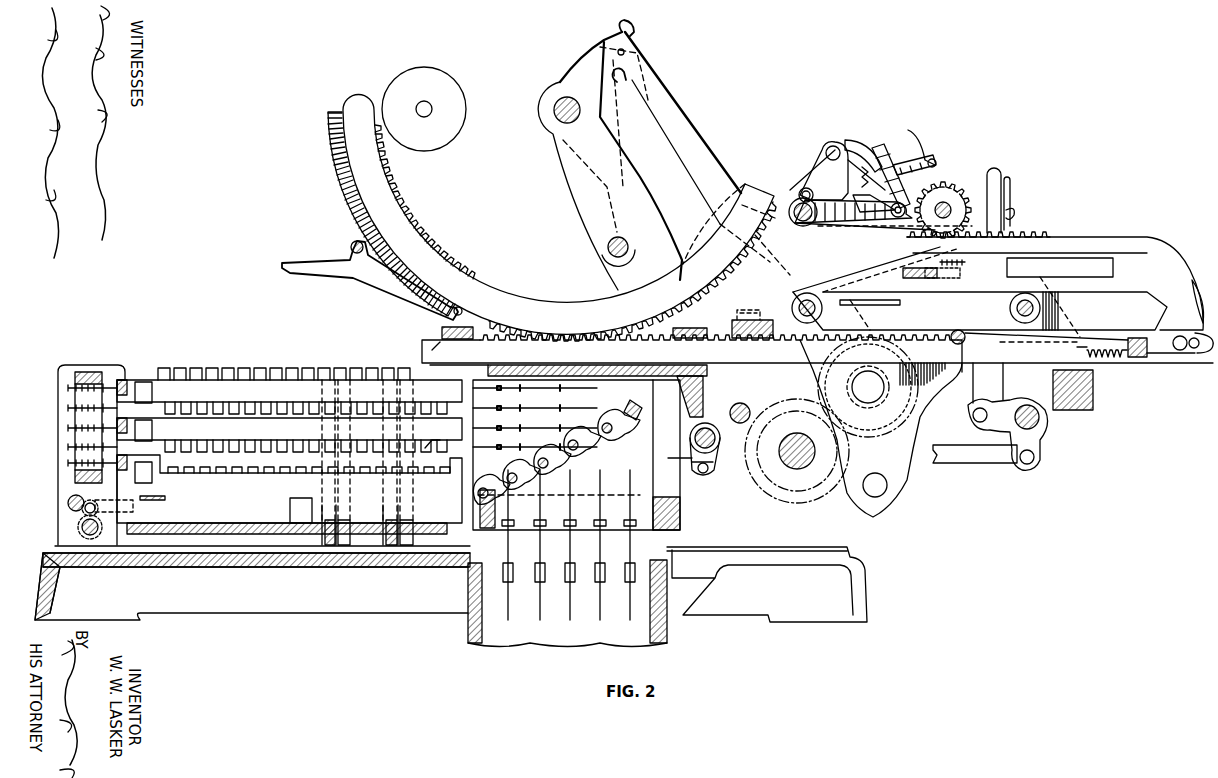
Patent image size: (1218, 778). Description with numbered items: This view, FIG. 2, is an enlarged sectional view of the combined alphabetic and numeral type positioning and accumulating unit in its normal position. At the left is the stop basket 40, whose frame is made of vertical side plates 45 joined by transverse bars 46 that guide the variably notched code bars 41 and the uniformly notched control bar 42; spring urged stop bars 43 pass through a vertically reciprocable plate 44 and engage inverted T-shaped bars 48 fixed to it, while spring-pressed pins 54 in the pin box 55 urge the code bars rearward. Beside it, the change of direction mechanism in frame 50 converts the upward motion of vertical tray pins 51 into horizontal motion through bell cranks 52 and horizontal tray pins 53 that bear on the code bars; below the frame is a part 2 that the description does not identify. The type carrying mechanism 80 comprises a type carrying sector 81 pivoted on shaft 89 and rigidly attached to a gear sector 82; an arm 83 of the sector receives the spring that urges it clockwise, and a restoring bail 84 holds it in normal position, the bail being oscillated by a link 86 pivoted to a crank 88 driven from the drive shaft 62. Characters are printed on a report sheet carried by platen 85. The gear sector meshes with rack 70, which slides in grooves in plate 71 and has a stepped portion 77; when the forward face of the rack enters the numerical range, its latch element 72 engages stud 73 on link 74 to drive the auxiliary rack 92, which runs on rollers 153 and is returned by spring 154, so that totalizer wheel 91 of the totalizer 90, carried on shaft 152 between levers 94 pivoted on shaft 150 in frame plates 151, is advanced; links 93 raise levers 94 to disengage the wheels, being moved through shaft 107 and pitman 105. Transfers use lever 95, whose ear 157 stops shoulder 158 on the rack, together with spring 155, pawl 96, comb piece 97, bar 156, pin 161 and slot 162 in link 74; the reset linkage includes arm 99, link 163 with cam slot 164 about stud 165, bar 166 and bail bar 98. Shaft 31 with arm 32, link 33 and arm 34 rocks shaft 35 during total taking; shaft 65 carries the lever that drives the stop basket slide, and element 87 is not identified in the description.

The type bars / pins 2 is at (610, 615).
The shaft 31 is at (79, 530).
The arm 32 is at (82, 510).
The link 33 is at (76, 500).
The arm 34 is at (718, 456).
The rock shaft 35 is at (712, 442).
The stop basket 40 is at (243, 336).
The variably notched code bars 41 is at (157, 380).
The control bar 42 is at (228, 480).
The stop bars 43 is at (360, 368).
The vertically reciprocable plate 44 is at (265, 523).
The side plates 45 is at (96, 365).
The transverse bars 46 is at (432, 410).
The inverted T-shaped bars 48 is at (332, 548).
The frame 50 is at (652, 400).
The vertical tray pins 51 is at (627, 513).
The bell cranks 52 is at (600, 462).
The horizontal tray pins 53 is at (540, 388).
The spring-pressed pins 54 is at (68, 463).
The pin box 55 is at (68, 408).
The drive shaft 62 is at (799, 470).
The shaft 65 is at (750, 408).
The rack 70 is at (425, 347).
The plate 71 is at (700, 380).
The latch element 72 is at (1137, 338).
The stud 73 is at (958, 346).
The link 74 is at (1102, 332).
The stepped portion 77 is at (445, 352).
The type carrying mechanism 80 is at (528, 195).
The type carrying sector 81 is at (385, 190).
The gear sector 82 is at (545, 303).
The arm 83 is at (622, 27).
The restoring bail 84 is at (608, 247).
The platen 85 is at (455, 80).
The link 86 is at (697, 148).
The lever 87 is at (282, 266).
The crank 88 is at (905, 355).
The shaft 89 is at (555, 112).
The totalizer 90 is at (960, 132).
The totalizer wheel 91 is at (948, 202).
The auxiliary rack 92 is at (1148, 240).
The links 93 is at (1003, 185).
The levers 94 is at (1020, 213).
The lever 95 is at (860, 232).
The pawl 96 is at (939, 167).
The comb piece 97 is at (862, 150).
The bail bar 98 is at (908, 132).
The arm 99 is at (805, 185).
The pitman 105 is at (985, 455).
The shaft 107 is at (1040, 420).
The transverse shaft 150 is at (799, 192).
The frame plates 151 is at (795, 205).
The transverse shaft 152 is at (927, 263).
The rollers 153 is at (792, 305).
The spring 154 is at (1108, 362).
The spring 155 is at (822, 160).
The transverse bar 156 is at (998, 178).
The turned-over ear 157 is at (945, 257).
The shoulder 158 is at (935, 278).
The pin 161 is at (1194, 349).
The slot 162 is at (1197, 285).
The link 163 is at (850, 145).
The cam slot 164 is at (892, 160).
The stud 165 is at (866, 197).
The transverse bar 166 is at (930, 160).